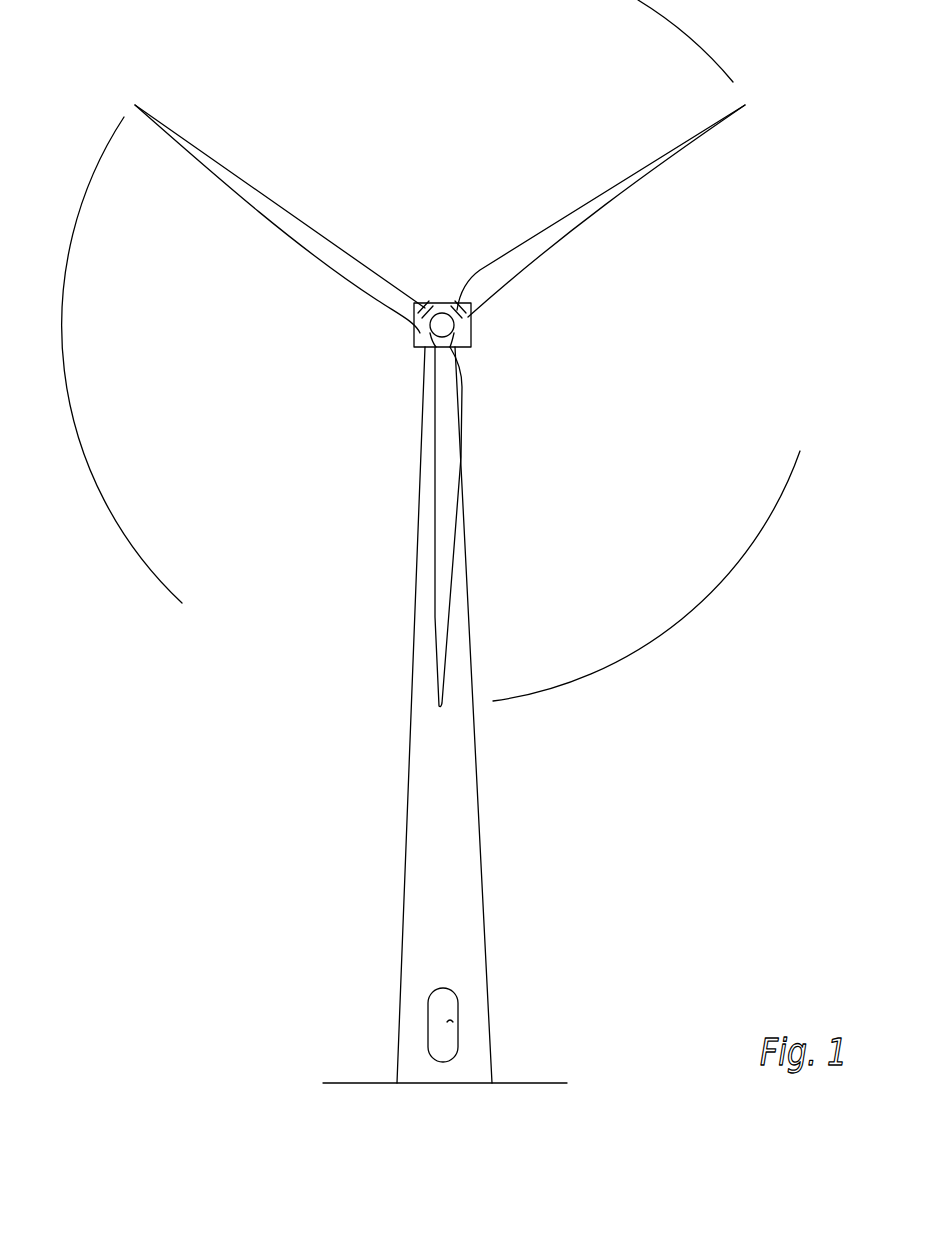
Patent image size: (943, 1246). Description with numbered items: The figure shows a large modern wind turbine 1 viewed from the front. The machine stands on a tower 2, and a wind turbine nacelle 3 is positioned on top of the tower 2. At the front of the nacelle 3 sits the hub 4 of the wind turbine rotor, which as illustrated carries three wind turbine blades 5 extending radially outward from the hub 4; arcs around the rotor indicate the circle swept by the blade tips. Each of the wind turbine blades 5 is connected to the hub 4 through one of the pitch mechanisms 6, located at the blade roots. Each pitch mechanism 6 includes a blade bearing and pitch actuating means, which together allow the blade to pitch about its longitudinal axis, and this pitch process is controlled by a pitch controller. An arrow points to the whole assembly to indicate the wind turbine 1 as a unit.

The wind turbine 1 is at (440, 594).
The tower 2 is at (448, 772).
The wind turbine nacelle 3 is at (452, 345).
The hub 4 is at (440, 314).
The wind turbine blades 5 is at (445, 565).
The pitch mechanisms 6 is at (462, 322).